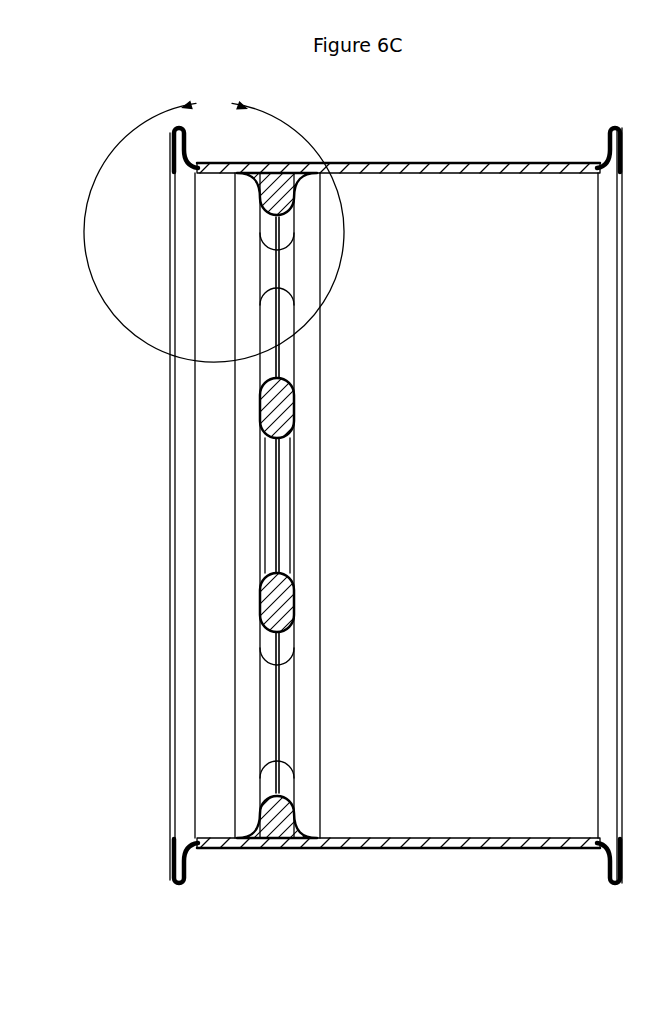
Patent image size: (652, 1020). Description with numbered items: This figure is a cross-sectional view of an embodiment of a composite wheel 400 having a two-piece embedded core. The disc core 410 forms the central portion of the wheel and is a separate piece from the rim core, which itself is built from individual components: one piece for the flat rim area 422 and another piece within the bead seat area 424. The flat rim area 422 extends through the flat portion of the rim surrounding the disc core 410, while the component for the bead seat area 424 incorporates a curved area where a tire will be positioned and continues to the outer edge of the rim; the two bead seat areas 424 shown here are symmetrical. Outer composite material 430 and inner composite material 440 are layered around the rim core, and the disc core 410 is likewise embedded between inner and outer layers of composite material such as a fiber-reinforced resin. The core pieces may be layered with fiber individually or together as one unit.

The wheel 400 is at (132, 512).
The disc core 410 is at (273, 203).
The flat rim area 422 is at (368, 162).
The bead seat area 424 is at (603, 160).
The outer composite material 430 is at (170, 127).
The inner composite material 440 is at (246, 168).